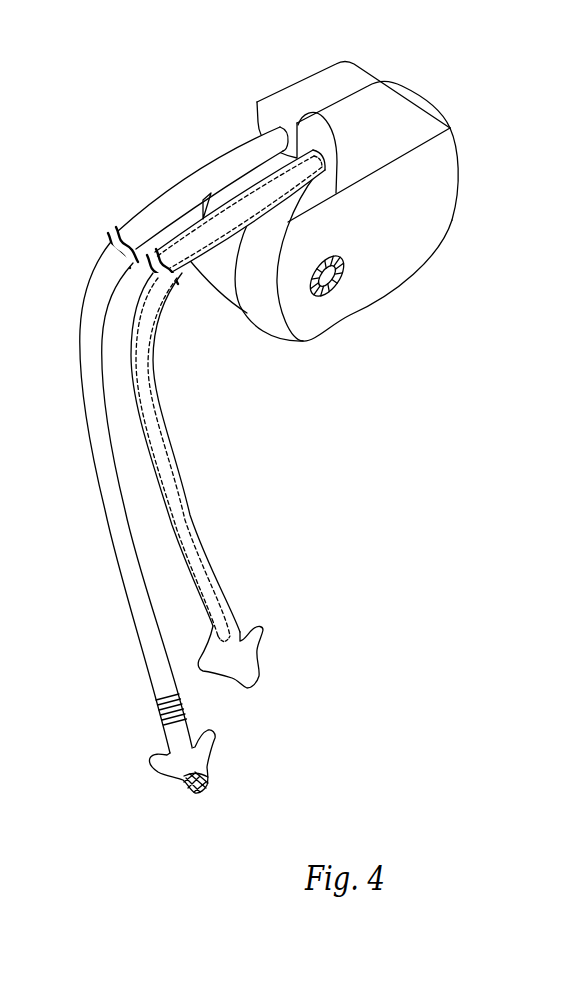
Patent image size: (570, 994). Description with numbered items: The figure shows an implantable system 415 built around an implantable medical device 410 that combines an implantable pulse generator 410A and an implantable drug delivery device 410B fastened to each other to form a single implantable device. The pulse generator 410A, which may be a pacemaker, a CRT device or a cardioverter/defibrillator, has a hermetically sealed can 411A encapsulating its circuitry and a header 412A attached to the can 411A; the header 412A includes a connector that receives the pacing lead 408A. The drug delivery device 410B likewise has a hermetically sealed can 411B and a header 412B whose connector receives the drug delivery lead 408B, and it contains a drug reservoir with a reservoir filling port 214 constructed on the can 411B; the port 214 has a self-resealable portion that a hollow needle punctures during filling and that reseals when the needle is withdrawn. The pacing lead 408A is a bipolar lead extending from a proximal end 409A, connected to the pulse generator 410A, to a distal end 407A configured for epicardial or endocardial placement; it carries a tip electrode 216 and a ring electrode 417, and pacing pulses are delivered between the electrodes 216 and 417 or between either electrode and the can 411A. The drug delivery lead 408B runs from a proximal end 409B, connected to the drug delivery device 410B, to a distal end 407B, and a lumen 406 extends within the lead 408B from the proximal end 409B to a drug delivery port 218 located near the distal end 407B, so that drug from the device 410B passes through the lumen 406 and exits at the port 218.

The reservoir filling port 214 is at (331, 285).
The tip electrode 216 is at (190, 797).
The drug delivery port 218 is at (213, 630).
The lumen 406 is at (210, 471).
The distal end 407A is at (207, 787).
The distal end 407B is at (262, 680).
The pacing lead 408A is at (153, 471).
The drug delivery lead 408B is at (245, 419).
The proximal end 409A is at (264, 136).
The proximal end 409B is at (323, 202).
The implantable medical device 410 is at (359, 214).
The implantable pulse generator 410A is at (217, 277).
The implantable drug delivery device 410B is at (253, 300).
The can 411A is at (203, 200).
The can 411B is at (457, 193).
The header 412A is at (373, 74).
The header 412B is at (411, 96).
The implantable system 415 is at (210, 471).
The ring electrode 417 is at (160, 707).